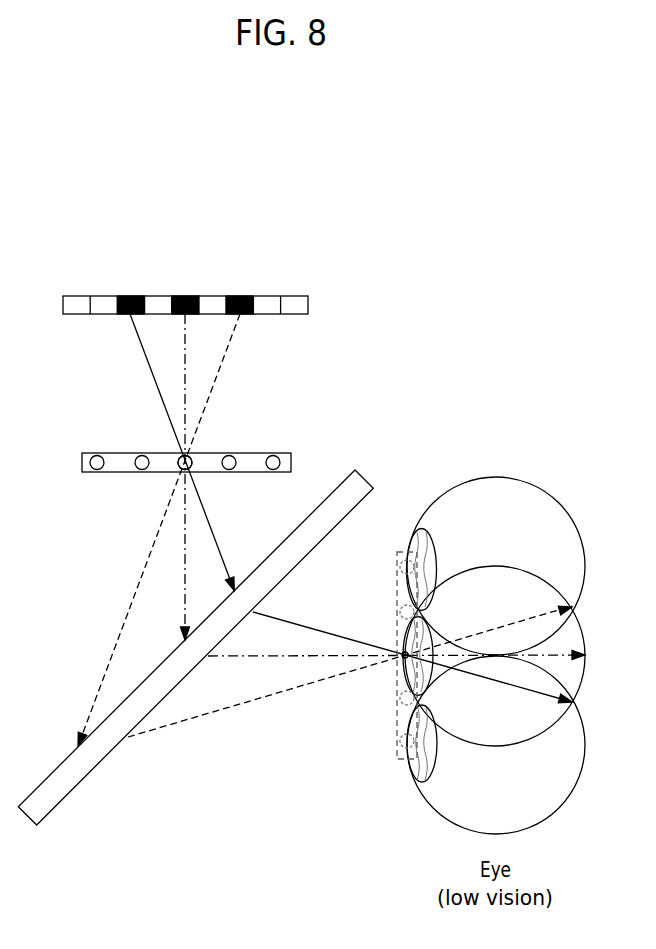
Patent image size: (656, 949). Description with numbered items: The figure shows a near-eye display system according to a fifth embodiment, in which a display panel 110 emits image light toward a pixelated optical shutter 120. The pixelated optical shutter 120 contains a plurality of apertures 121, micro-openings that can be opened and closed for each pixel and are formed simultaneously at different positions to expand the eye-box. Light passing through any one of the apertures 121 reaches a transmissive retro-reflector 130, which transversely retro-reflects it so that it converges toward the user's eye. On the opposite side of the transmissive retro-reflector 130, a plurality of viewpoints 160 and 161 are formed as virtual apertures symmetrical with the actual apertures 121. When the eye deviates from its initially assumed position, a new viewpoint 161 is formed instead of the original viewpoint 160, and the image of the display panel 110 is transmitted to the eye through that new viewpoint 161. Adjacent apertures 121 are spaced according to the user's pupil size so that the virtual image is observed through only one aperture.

The display panel 110 is at (308, 305).
The pixelated optical shutter 120 is at (291, 460).
The apertures 121 is at (170, 465).
The transmissive retro-reflector 130 is at (364, 480).
The viewpoint 160 is at (398, 727).
The viewpoint 161 is at (397, 638).